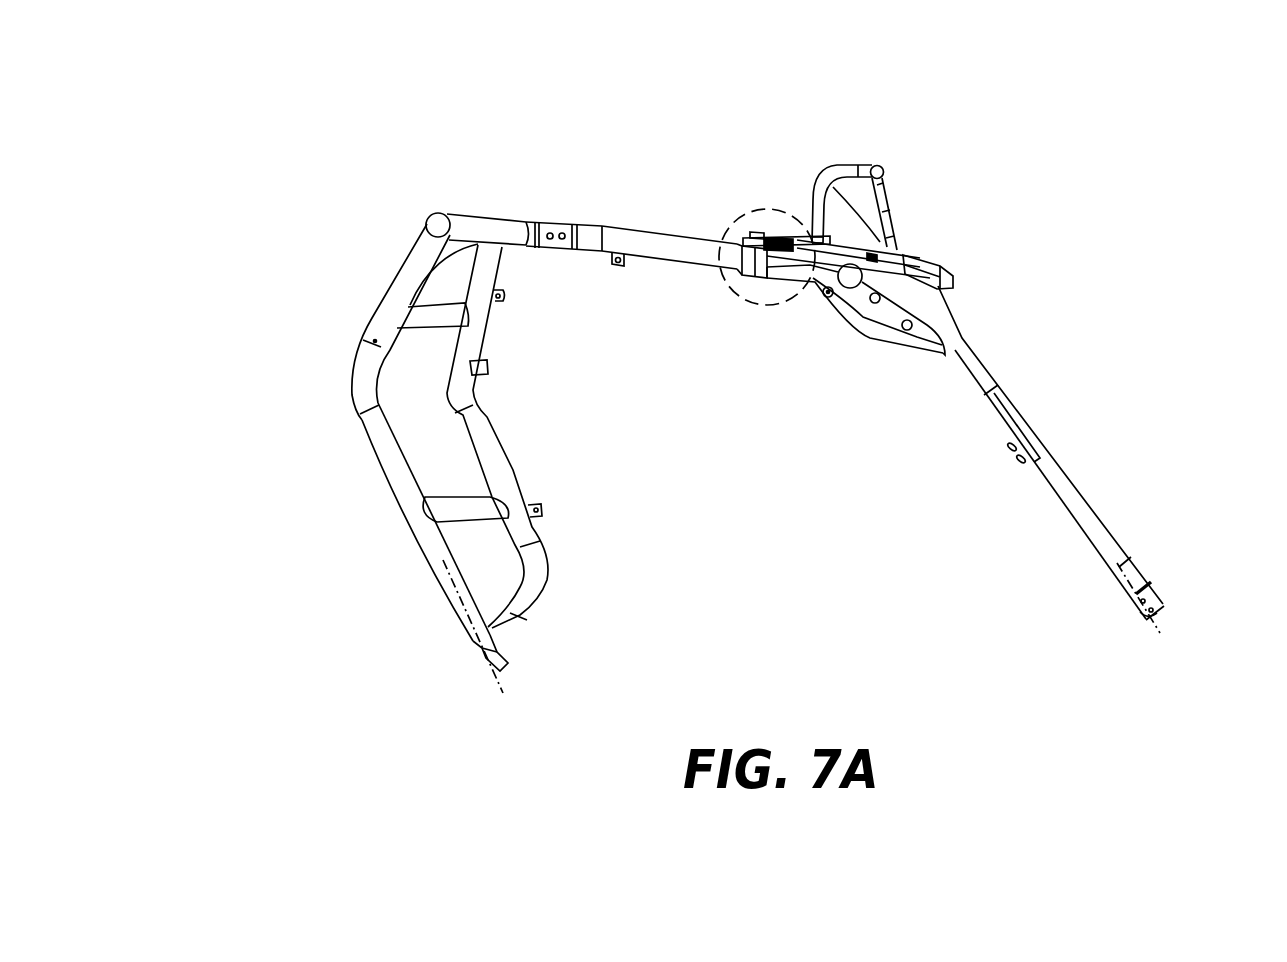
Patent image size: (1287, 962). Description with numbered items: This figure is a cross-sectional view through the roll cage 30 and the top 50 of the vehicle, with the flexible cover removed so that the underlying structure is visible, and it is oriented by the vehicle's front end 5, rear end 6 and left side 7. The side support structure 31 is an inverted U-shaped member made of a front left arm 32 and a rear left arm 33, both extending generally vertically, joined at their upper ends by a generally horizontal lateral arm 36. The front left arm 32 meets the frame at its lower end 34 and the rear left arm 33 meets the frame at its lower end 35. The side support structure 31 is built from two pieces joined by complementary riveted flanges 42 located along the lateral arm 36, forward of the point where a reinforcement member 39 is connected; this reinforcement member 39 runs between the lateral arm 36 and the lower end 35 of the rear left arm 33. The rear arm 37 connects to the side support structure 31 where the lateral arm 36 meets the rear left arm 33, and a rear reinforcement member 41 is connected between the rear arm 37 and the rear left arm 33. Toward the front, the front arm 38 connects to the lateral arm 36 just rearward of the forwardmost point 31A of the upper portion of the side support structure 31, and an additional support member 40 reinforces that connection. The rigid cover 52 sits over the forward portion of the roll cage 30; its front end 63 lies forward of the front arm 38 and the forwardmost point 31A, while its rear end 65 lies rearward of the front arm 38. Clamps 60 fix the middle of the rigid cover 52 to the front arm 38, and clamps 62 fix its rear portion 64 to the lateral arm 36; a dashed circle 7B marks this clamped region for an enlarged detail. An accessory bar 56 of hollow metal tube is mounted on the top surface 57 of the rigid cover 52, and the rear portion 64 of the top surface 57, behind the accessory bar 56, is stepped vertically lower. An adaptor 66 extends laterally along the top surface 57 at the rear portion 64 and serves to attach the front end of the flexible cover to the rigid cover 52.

The front end 5 is at (1176, 299).
The rear end 6 is at (245, 272).
The left side 7 is at (654, 82).
The detail view circle 7B is at (758, 222).
The roll cage 30 is at (1150, 128).
The side support structure 31 is at (325, 370).
The forwardmost point 31A is at (895, 278).
The front left arm 32 is at (1057, 480).
The rear left arm 33 is at (380, 440).
The lower end 34 is at (1158, 598).
The lower end 35 is at (487, 668).
The lateral arm 36 is at (618, 232).
The rear arm 37 is at (452, 222).
The front arm 38 is at (840, 278).
The reinforcement member 39 is at (490, 450).
The additional support member 40 is at (910, 348).
The rear reinforcement member 41 is at (412, 275).
The complementary flanges 42 is at (560, 232).
The top 50 is at (975, 172).
The rigid cover 52 is at (887, 205).
The accessory bar 56 is at (855, 167).
The top surface 57 is at (831, 166).
The clamps 60 is at (828, 297).
The clamps 62 is at (742, 270).
The front end 63 is at (948, 282).
The rear portion 64 is at (760, 230).
The rear end 65 is at (748, 250).
The adaptor 66 is at (773, 237).